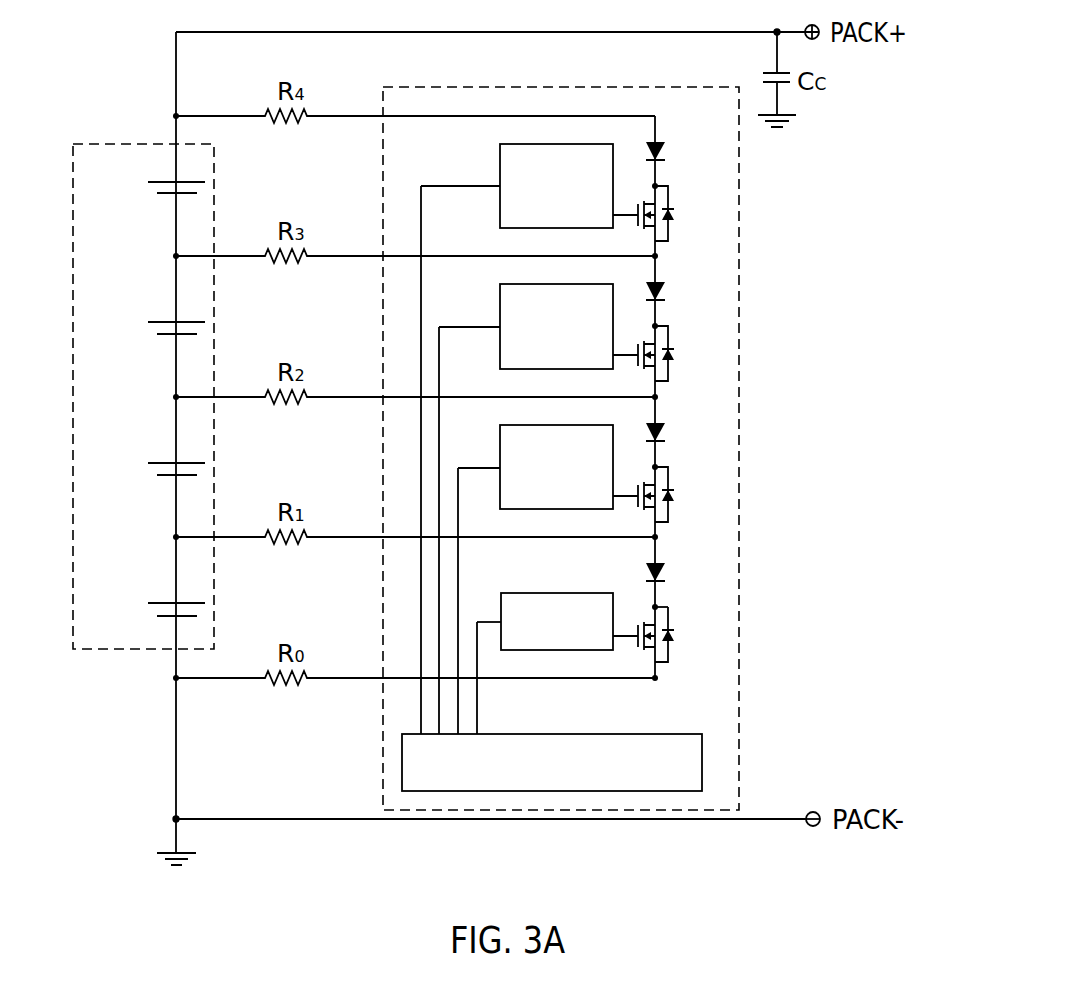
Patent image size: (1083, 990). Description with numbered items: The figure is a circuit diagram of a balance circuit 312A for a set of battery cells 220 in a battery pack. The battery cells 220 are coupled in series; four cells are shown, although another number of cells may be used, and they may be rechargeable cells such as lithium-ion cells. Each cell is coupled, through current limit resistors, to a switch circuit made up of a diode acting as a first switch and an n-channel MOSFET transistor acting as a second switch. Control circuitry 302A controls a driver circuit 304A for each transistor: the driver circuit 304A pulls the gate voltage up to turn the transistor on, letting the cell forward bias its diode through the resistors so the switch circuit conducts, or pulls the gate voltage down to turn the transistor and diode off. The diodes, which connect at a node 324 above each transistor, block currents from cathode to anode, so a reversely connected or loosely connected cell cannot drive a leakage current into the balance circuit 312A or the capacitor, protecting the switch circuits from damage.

The battery cells 220 is at (102, 143).
The balance circuit 312A is at (739, 270).
The driver circuit 304A is at (518, 593).
The switch node 324 is at (688, 602).
The control circuitry 302A is at (635, 734).